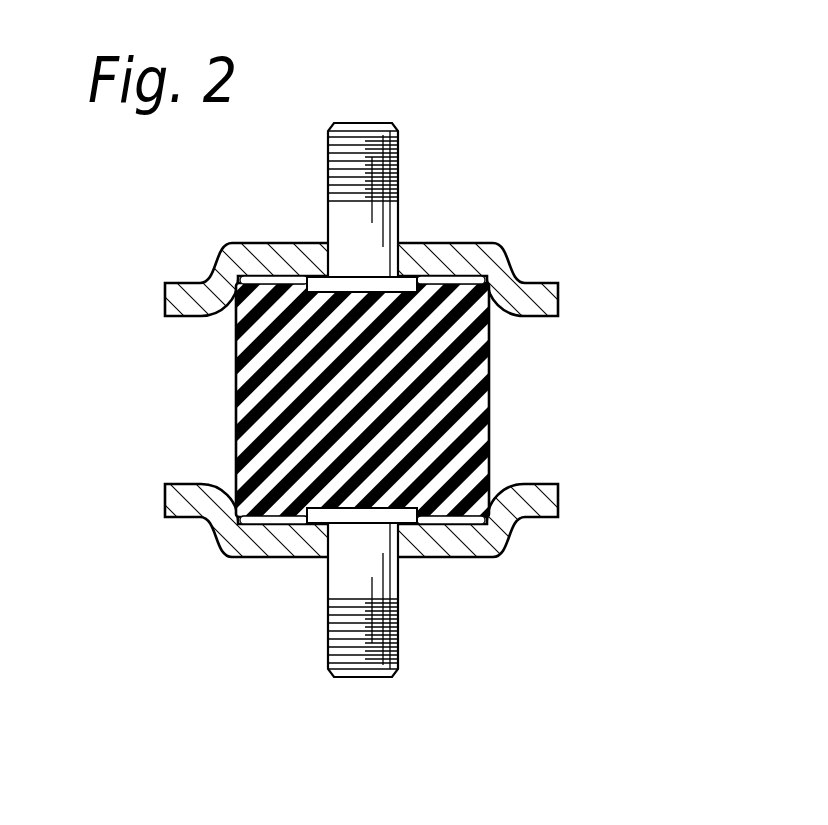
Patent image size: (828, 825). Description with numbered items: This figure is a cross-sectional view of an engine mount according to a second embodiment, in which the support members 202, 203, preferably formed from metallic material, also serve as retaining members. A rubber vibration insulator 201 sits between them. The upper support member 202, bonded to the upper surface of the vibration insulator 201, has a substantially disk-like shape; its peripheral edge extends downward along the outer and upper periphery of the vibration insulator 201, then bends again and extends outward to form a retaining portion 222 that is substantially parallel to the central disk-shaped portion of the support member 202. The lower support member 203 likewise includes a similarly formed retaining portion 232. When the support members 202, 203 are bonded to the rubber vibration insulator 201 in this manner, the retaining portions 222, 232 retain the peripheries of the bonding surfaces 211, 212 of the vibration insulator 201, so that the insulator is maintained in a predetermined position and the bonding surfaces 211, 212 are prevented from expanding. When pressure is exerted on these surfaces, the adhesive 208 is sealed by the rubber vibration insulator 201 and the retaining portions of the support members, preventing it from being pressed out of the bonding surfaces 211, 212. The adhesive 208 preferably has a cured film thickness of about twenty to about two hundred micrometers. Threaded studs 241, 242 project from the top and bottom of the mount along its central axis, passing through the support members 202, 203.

The rubber vibration insulator 201 is at (238, 416).
The support member 202 is at (499, 254).
The support member 203 is at (509, 551).
The adhesive 208 is at (261, 280).
The bonding surface 211 is at (458, 280).
The bonding surface 212 is at (463, 523).
The retaining portion 222 is at (548, 292).
The retaining portion 232 is at (548, 494).
The upper bolt 241 is at (399, 151).
The lower bolt 242 is at (399, 626).